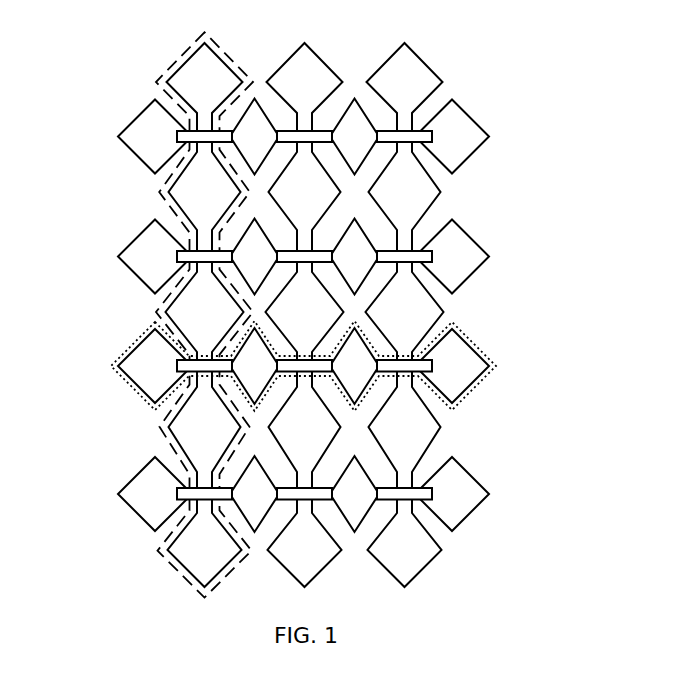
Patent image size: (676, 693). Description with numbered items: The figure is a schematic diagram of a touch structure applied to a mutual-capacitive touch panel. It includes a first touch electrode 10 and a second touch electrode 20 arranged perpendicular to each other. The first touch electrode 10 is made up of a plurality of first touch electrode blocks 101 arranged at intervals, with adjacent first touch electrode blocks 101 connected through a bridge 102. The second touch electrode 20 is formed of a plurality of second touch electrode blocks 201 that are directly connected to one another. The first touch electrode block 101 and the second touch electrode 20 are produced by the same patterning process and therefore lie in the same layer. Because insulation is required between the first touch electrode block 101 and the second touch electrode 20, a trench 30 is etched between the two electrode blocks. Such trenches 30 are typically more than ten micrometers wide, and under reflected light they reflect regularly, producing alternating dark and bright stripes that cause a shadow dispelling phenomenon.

The first touch electrode 10 is at (306, 352).
The first touch electrode block 101 is at (163, 373).
The bridge 102 is at (420, 370).
The second touch electrode 20 is at (156, 299).
The second touch electrode block 201 is at (197, 192).
The trench 30 is at (364, 177).